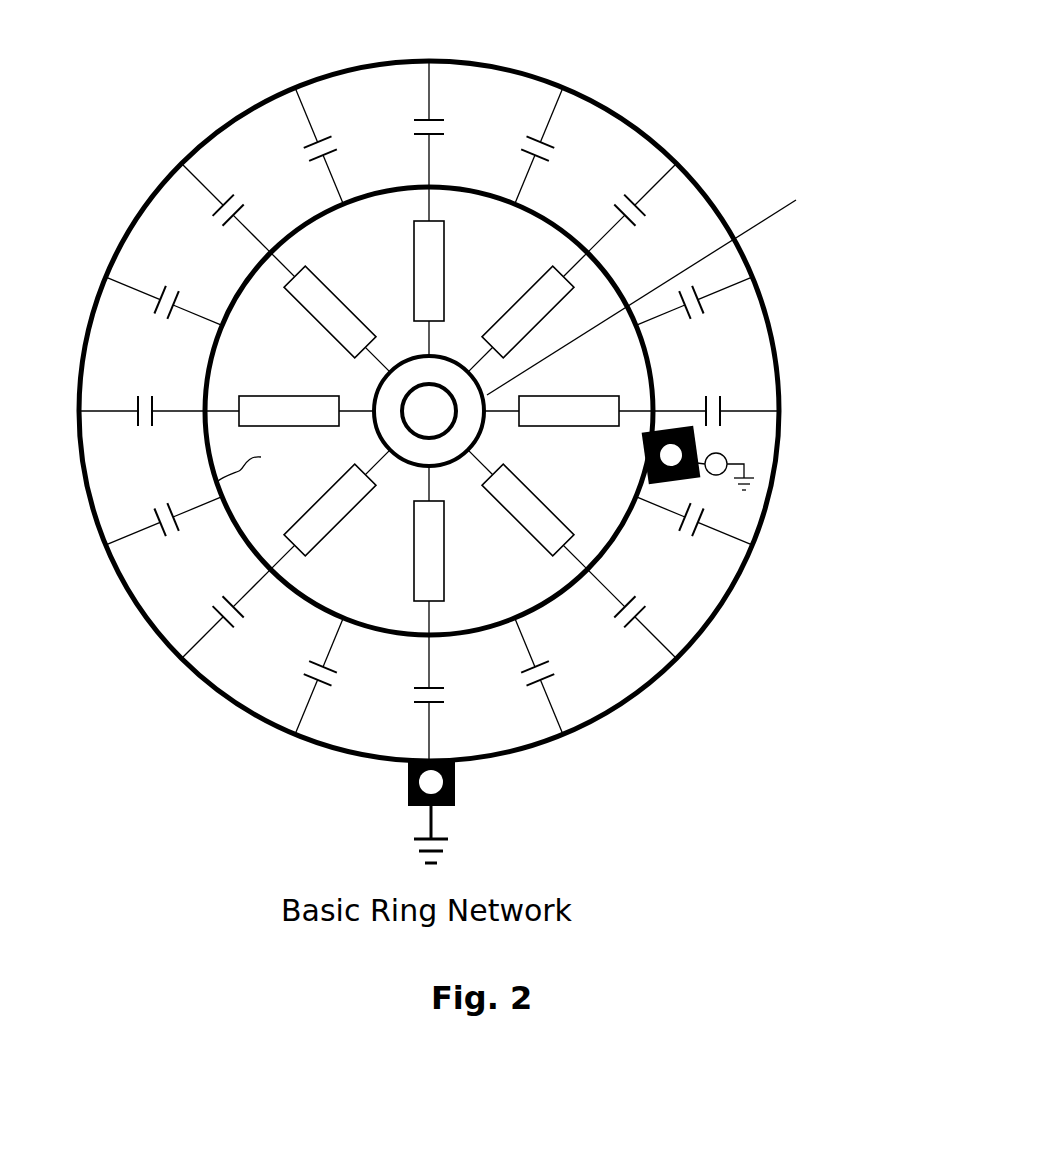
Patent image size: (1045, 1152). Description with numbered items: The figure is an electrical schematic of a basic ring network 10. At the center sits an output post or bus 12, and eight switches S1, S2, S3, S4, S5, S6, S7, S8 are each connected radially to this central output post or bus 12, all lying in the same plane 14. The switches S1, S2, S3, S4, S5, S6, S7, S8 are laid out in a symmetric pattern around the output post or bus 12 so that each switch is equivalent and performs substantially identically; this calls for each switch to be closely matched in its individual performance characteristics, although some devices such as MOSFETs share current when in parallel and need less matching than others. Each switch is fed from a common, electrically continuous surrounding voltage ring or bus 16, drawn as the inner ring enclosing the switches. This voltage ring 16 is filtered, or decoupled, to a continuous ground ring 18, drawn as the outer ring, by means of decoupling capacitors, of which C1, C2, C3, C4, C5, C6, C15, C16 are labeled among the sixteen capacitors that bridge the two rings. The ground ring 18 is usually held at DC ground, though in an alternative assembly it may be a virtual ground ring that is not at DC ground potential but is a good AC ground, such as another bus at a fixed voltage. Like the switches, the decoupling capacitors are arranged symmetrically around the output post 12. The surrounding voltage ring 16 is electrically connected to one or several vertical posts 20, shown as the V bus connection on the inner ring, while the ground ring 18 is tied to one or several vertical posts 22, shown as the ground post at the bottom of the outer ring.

The basic ring network 10 is at (172, 96).
The output post or bus 12 is at (437, 387).
The plane 14 is at (580, 479).
The voltage ring or bus 16 is at (618, 532).
The ground ring 18 is at (642, 697).
The vertical post 20 is at (667, 433).
The vertical post 22 is at (458, 783).
The decoupling capacitor C1 is at (445, 123).
The decoupling capacitor C2 is at (542, 145).
The decoupling capacitor C3 is at (632, 207).
The decoupling capacitor C4 is at (694, 305).
The decoupling capacitor C5 is at (716, 425).
The decoupling capacitor C6 is at (694, 523).
The decoupling capacitor C15 is at (225, 207).
The decoupling capacitor C16 is at (330, 145).
The switch S1 is at (429, 271).
The switch S2 is at (527, 312).
The switch S3 is at (568, 411).
The switch S4 is at (527, 509).
The switch S5 is at (429, 550).
The switch S6 is at (330, 509).
The switch S7 is at (289, 411).
The switch S8 is at (330, 312).